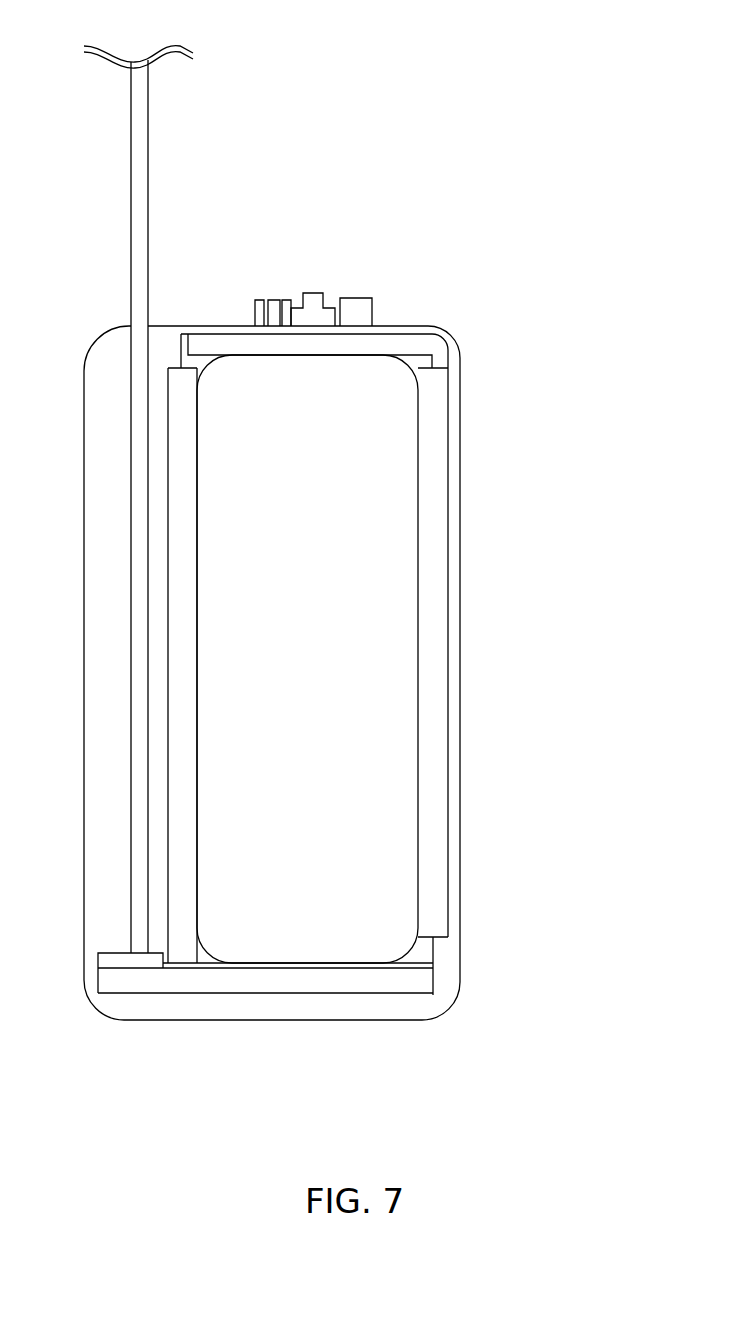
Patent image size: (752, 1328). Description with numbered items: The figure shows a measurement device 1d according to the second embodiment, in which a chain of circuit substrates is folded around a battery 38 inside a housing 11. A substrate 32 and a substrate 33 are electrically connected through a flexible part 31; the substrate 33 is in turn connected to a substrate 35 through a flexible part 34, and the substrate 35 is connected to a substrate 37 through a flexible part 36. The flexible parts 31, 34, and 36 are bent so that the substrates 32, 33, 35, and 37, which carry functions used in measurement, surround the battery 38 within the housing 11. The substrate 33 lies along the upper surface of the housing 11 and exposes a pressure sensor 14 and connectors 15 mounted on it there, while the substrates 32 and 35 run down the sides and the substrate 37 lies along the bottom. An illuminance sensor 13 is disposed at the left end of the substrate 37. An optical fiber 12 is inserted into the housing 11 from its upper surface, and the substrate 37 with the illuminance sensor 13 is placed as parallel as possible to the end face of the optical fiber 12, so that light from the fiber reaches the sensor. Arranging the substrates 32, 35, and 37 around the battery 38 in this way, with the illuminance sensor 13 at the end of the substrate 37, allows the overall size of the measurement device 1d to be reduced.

The measurement device 1d is at (603, 102).
The housing 11 is at (84, 352).
The optical fiber 12 is at (130, 188).
The illuminance sensor 13 is at (100, 952).
The pressure sensor 14 is at (316, 293).
The connectors 15 is at (270, 298).
The flexible part 31 is at (181, 332).
The substrate 32 is at (182, 660).
The substrate 33 is at (260, 312).
The flexible part 34 is at (433, 355).
The substrate 35 is at (432, 398).
The flexible part 36 is at (433, 948).
The substrate 37 is at (293, 985).
The battery 38 is at (388, 495).